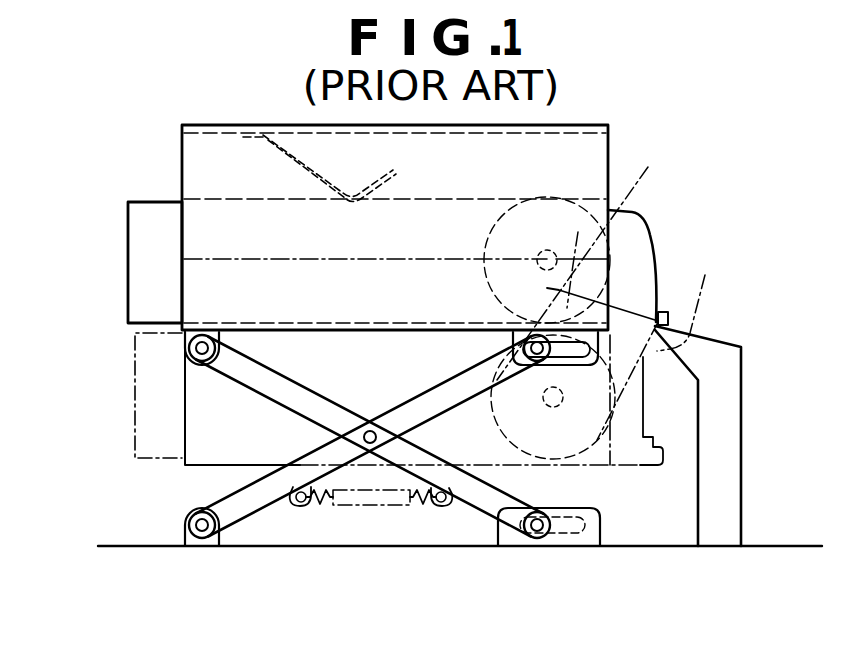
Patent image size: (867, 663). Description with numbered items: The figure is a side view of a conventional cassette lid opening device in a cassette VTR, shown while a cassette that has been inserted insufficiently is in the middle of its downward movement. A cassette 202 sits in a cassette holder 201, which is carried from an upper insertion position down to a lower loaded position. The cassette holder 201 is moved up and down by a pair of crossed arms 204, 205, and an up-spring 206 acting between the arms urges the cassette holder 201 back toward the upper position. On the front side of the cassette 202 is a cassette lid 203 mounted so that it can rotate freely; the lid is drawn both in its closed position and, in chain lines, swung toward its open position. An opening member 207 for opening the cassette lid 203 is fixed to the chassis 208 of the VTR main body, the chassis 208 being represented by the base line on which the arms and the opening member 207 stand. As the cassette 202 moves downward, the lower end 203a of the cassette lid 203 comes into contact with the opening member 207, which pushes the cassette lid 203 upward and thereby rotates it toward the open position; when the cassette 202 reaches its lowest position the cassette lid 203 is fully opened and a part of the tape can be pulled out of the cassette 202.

The cassette holder 201 is at (226, 150).
The cassette 202 is at (145, 232).
The cassette lid 203 is at (632, 226).
The lower end of the cassette lid 203a is at (628, 318).
The arm 204 is at (253, 380).
The arm 205 is at (412, 410).
The up-spring 206 is at (385, 510).
The opening member 207 is at (725, 430).
The chassis 208 is at (155, 548).